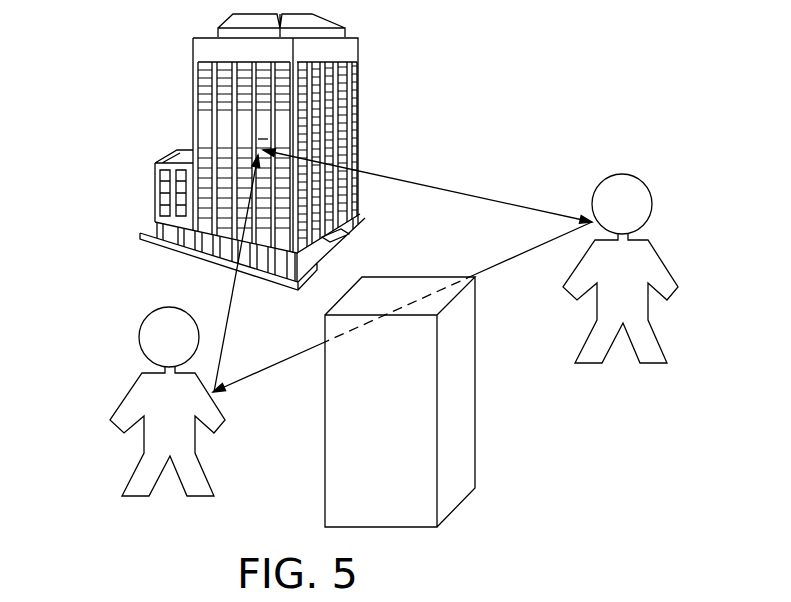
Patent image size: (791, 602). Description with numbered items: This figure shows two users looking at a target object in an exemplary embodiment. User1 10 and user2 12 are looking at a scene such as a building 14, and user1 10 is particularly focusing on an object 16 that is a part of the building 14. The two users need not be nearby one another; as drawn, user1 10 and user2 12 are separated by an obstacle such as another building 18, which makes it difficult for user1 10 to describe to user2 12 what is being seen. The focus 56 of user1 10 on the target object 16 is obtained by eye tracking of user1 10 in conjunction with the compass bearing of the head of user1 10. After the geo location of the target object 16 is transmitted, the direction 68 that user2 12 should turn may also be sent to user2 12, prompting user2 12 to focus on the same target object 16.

The user1 10 is at (128, 397).
The user2 12 is at (660, 257).
The building 14 is at (120, 174).
The object 16 is at (263, 139).
The building 18 is at (418, 448).
The focus 56 is at (230, 302).
The direction 68 is at (465, 193).